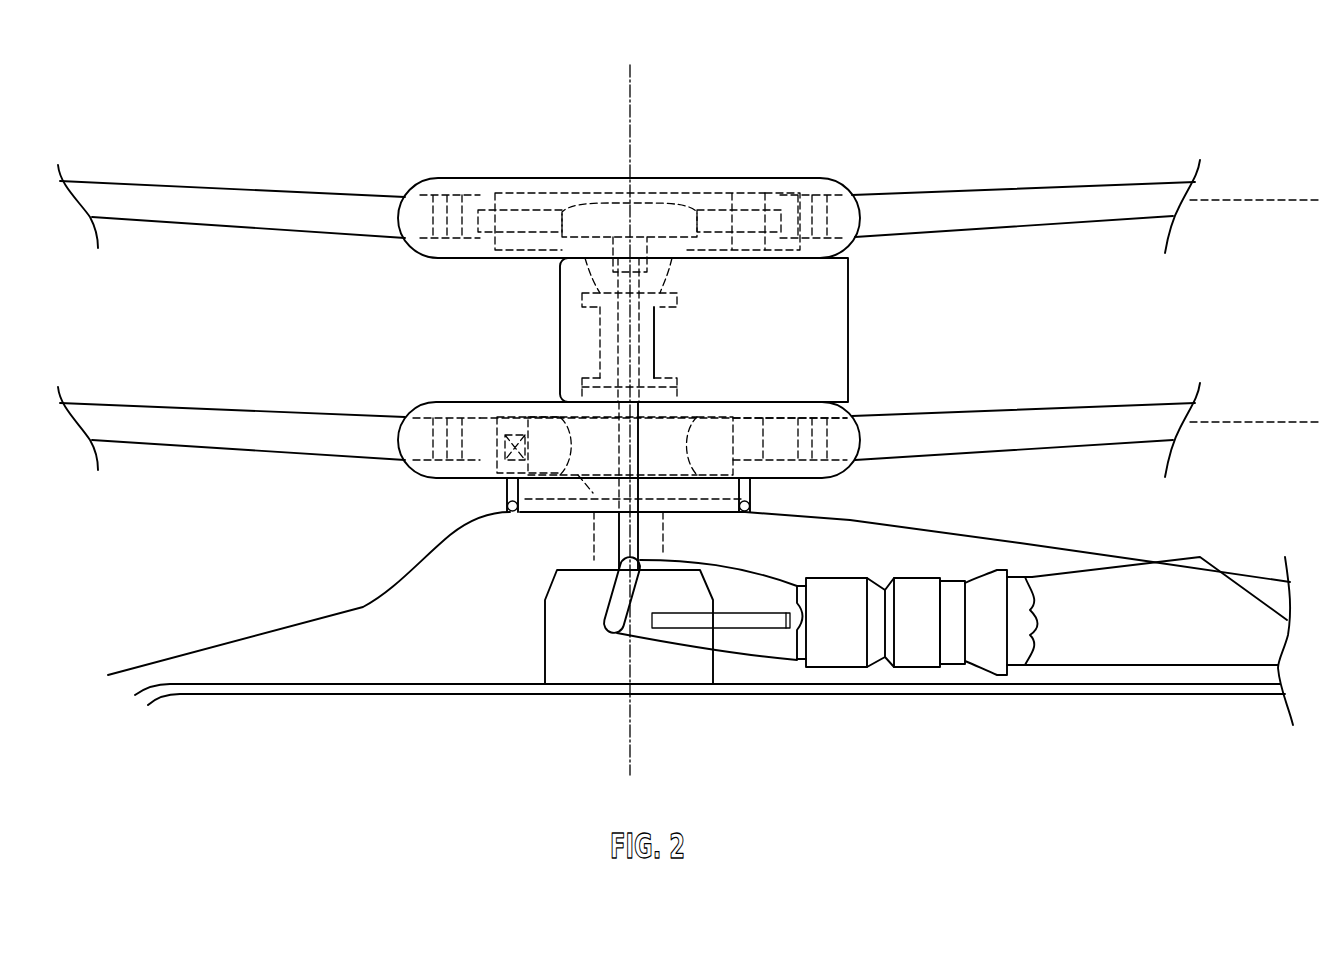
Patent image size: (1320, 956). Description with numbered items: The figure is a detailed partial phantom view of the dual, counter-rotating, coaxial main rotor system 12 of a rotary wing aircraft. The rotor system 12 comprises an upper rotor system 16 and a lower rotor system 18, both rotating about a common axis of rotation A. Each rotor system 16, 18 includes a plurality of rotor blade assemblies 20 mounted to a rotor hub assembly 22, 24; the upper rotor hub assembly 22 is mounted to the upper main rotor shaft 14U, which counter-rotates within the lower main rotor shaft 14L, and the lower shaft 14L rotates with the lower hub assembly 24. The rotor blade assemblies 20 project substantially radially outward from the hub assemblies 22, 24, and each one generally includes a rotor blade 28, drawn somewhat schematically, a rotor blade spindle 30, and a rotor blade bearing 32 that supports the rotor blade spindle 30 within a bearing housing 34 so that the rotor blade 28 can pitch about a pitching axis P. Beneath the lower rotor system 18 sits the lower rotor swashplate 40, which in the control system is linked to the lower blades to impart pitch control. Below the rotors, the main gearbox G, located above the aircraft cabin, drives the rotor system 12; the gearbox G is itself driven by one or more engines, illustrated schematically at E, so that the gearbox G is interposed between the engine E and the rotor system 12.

The dual, counter-rotating, coaxial main rotor system 12 is at (393, 512).
The upper main rotor shaft 14U is at (608, 329).
The lower main rotor shaft 14L is at (598, 362).
The upper rotor system 16 is at (905, 168).
The lower rotor system 18 is at (880, 393).
The rotor blade assembly 20 is at (1053, 205).
The rotor hub assembly 22 is at (665, 210).
The lower hub assembly 24 is at (660, 500).
The rotor blade 28 is at (1028, 198).
The rotor blade spindle 30 is at (842, 200).
The rotor blade bearing 32 is at (812, 200).
The bearing housing 34 is at (745, 200).
The lower rotor swashplate 40 is at (562, 507).
The axis of rotation A is at (632, 72).
The pitching axis P is at (1262, 197).
The main gearbox G is at (598, 652).
The engine E is at (838, 640).